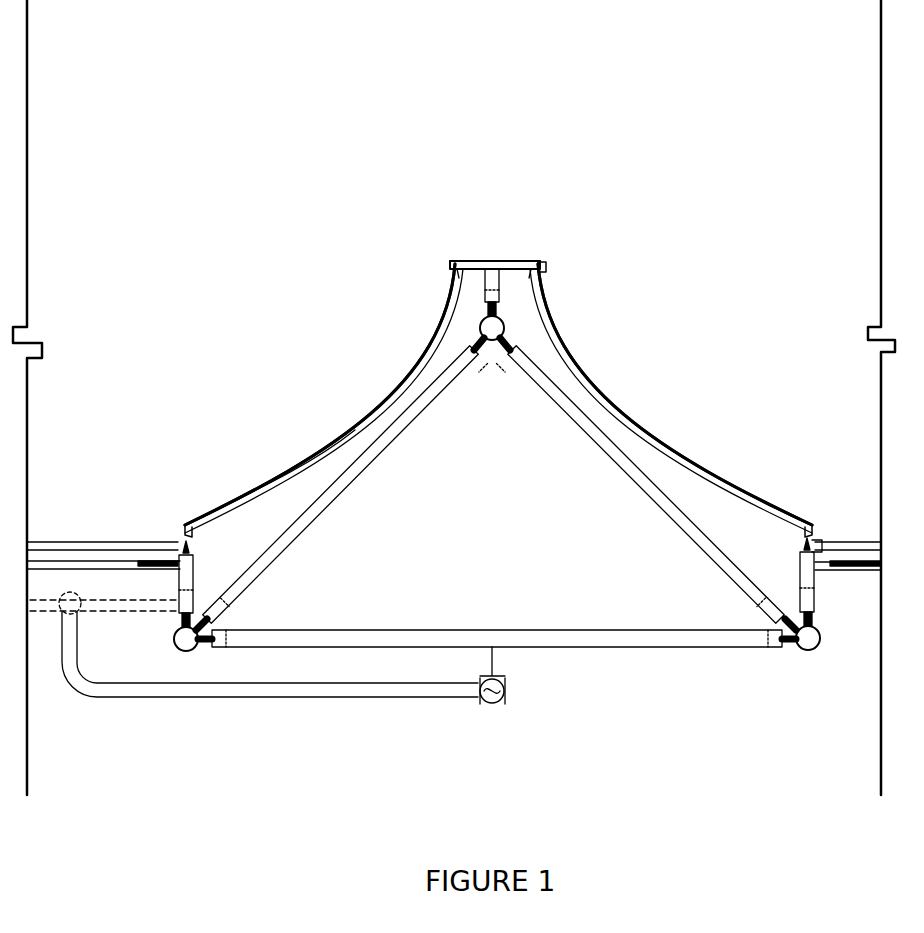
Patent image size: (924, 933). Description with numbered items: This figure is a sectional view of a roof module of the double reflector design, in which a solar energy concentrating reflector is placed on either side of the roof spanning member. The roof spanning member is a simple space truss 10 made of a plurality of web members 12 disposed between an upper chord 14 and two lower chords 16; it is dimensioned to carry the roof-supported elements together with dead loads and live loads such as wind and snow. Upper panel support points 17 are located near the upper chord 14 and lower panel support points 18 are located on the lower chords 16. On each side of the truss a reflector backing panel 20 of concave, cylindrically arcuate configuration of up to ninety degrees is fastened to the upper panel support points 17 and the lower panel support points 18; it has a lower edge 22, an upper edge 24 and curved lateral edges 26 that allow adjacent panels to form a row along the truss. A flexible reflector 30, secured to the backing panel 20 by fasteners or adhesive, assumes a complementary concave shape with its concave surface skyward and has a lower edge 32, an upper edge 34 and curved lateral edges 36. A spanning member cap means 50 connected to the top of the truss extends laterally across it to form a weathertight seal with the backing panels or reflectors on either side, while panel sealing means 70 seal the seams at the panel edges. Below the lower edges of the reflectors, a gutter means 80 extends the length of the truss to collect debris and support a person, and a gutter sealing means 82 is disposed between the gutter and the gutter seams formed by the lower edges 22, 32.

The space truss 10 is at (496, 506).
The web members 12 is at (293, 553).
The upper chord 14 is at (491, 336).
The lower chords 16 is at (185, 657).
The upper panel support points 17 is at (525, 287).
The lower panel support points 18 is at (793, 583).
The reflector backing panel 20 is at (421, 352).
The lower edge 22 is at (176, 537).
The upper edge 24 is at (458, 265).
The curved lateral edges 26 is at (383, 414).
The solar energy concentrating reflector 30 is at (351, 429).
The lower edge 32 is at (177, 526).
The upper edge 34 is at (455, 262).
The curved lateral edges 36 is at (282, 475).
The spanning member cap means 50 is at (492, 261).
The panel sealing means 70 is at (549, 282).
The gutter means 80 is at (52, 561).
The gutter sealing means 82 is at (172, 556).